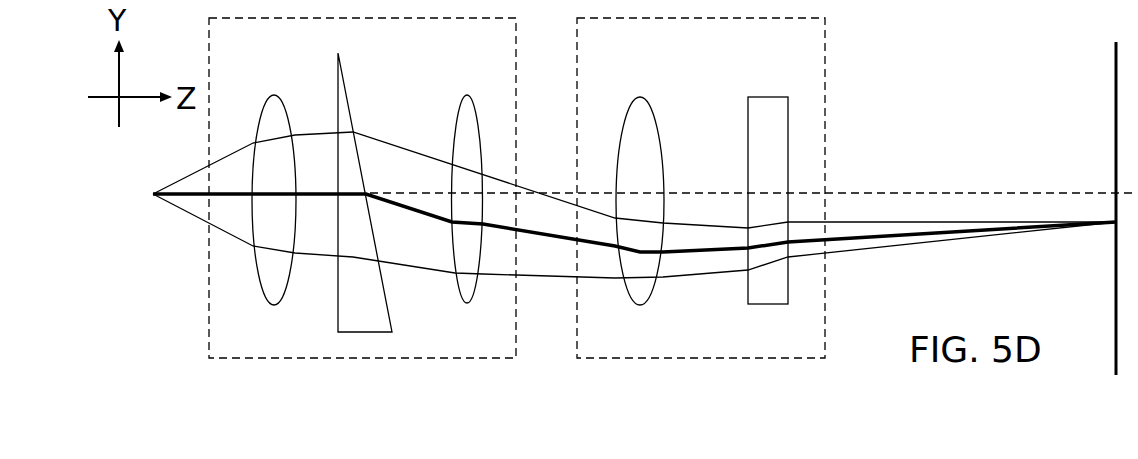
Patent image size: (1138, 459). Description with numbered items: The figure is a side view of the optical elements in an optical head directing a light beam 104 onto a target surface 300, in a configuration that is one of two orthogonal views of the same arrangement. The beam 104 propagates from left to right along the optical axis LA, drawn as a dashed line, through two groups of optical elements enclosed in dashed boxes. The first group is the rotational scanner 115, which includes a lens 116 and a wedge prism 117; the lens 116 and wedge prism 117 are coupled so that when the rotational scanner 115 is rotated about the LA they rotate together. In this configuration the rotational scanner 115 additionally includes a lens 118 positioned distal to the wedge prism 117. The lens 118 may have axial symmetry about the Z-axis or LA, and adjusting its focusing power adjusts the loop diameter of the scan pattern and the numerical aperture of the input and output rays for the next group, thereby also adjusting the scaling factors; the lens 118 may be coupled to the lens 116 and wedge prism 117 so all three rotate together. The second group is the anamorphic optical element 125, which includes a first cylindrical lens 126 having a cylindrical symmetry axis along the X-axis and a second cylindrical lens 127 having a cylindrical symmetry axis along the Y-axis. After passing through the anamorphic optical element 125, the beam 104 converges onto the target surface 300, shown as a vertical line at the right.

The light beam 104 is at (945, 236).
The rotational scanner 115 is at (302, 67).
The lens 116 is at (257, 277).
The wedge prism 117 is at (335, 265).
The lens 118 is at (462, 137).
The anamorphic optical element 125 is at (670, 67).
The first cylindrical lens 126 is at (644, 287).
The second cylindrical lens 127 is at (762, 275).
The target surface 300 is at (1116, 127).
The optical axis LA is at (963, 193).